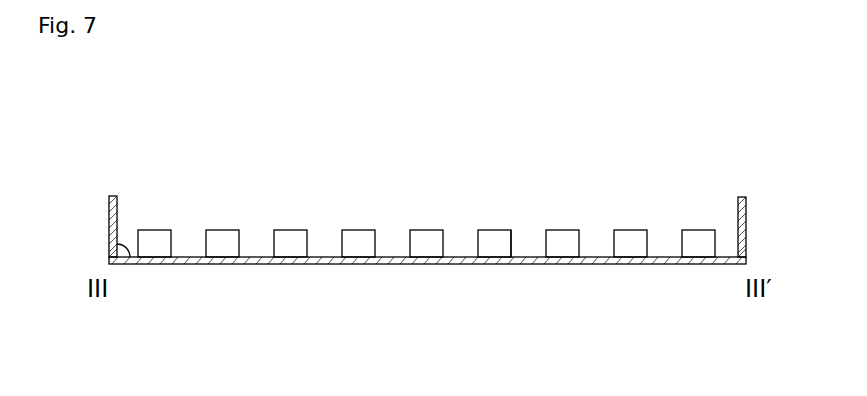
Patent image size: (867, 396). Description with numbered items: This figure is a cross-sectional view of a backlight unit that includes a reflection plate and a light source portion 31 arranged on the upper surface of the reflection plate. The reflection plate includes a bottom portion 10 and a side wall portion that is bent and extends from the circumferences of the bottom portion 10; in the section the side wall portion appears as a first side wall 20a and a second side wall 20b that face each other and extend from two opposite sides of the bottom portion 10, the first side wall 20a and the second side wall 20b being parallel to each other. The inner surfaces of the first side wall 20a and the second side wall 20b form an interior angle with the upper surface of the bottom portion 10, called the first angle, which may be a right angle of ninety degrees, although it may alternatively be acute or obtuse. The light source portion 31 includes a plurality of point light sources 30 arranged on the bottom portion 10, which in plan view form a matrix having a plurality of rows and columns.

The bottom portion 10 is at (452, 264).
The first side wall 20a is at (738, 215).
The second side wall 20b is at (118, 207).
The point light source 30 is at (357, 250).
The light source portion 31 is at (523, 228).